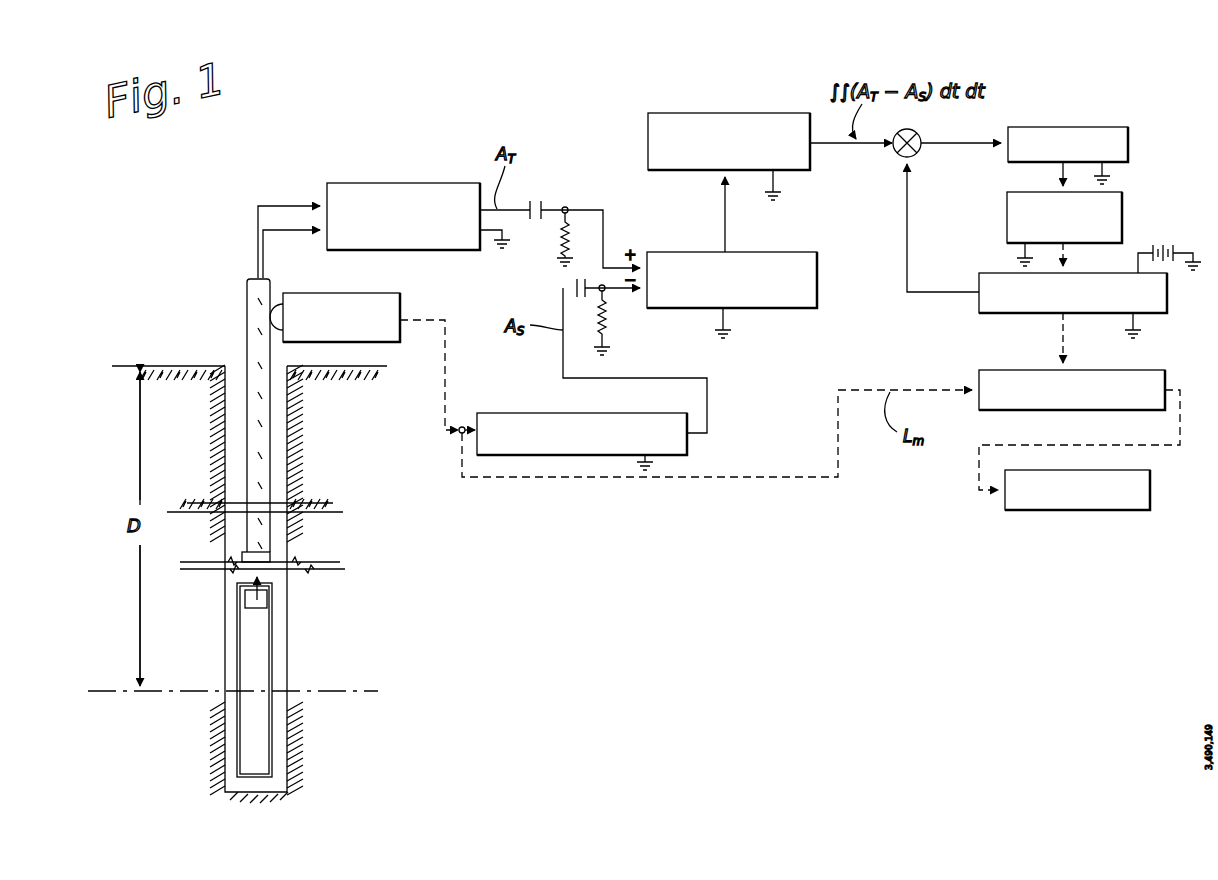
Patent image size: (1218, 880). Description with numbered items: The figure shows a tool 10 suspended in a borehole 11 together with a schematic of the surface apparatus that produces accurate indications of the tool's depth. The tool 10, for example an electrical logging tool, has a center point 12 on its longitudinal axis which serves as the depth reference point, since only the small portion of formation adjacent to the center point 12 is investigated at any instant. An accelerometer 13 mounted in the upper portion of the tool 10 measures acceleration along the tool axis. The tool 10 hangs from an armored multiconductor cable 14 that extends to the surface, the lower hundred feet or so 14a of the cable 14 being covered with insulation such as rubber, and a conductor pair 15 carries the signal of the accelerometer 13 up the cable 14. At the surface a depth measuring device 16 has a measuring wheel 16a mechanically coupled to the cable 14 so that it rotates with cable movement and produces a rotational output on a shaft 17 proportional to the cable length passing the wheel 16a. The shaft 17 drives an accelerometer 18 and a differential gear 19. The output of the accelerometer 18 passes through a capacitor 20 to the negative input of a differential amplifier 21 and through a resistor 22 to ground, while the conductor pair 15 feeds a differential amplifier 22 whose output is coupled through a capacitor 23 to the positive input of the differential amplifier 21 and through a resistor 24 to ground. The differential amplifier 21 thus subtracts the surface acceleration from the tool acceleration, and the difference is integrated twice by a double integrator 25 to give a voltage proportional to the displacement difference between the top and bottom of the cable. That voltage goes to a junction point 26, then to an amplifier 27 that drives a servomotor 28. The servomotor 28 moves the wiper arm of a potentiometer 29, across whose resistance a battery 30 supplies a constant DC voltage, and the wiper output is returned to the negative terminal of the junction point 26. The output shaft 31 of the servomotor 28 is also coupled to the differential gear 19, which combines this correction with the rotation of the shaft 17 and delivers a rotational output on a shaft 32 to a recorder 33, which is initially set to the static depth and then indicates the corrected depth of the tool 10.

The tool 10 is at (262, 668).
The borehole 11 is at (276, 437).
The center point 12 is at (233, 690).
The accelerometer 13 is at (268, 598).
The armored multiconductor cable 14 is at (272, 529).
The insulated lower portion of cable 14a is at (270, 554).
The conductor pair 15 is at (258, 251).
The depth measuring device 16 is at (340, 292).
The measuring wheel 16a is at (275, 318).
The shaft 17 is at (445, 372).
The accelerometer 18 is at (578, 413).
The differential gear 19 is at (1030, 370).
The capacitor 20 is at (577, 288).
The differential amplifier 21 is at (755, 308).
The differential amplifier / resistor 22 is at (370, 182).
The capacitor 23 is at (540, 200).
The resistor 24 is at (560, 245).
The double integrator circuit 25 is at (731, 113).
The junction point 26 is at (918, 131).
The amplifier 27 is at (1072, 127).
The servomotor 28 is at (1122, 218).
The potentiometer 29 is at (1167, 292).
The battery 30 is at (1160, 238).
The output shaft 31 is at (1070, 257).
The shaft 32 is at (1055, 445).
The recorder 33 is at (1150, 490).